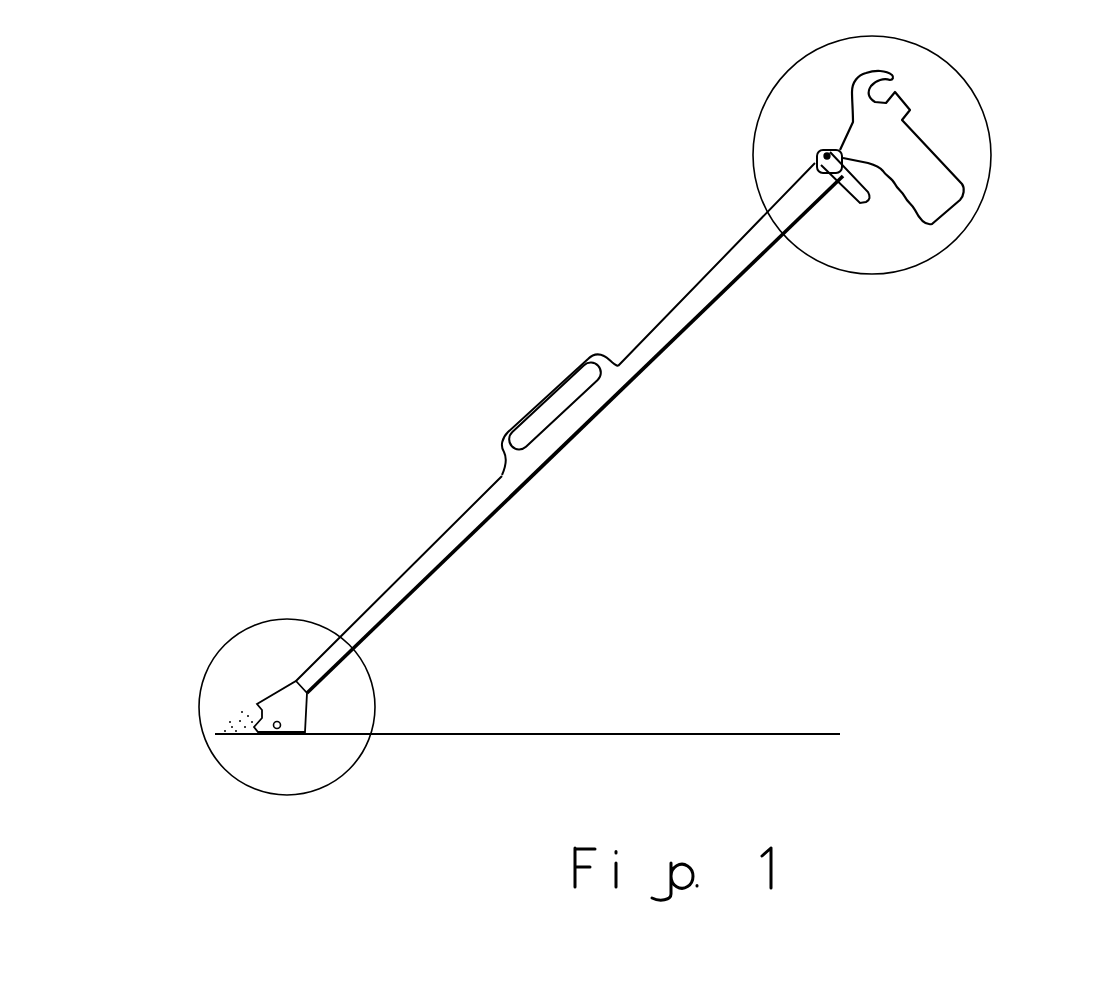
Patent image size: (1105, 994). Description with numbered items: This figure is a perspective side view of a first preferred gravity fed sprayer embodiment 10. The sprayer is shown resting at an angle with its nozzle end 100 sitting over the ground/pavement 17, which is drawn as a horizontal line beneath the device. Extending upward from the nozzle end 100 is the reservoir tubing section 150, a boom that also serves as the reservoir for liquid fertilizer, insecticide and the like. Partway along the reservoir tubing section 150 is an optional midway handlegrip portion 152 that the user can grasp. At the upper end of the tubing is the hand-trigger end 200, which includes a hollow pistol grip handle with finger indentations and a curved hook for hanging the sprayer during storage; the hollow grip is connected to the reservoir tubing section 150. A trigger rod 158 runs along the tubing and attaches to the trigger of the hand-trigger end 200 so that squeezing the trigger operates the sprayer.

The gravity fed sprayer embodiment 10 is at (612, 415).
The ground/pavement 17 is at (410, 737).
The nozzle end 100 is at (232, 637).
The reservoir tubing section 150 is at (685, 298).
The midway handlegrip portion 152 is at (520, 410).
The trigger rod 158 is at (638, 377).
The hand-trigger end 200 is at (957, 233).